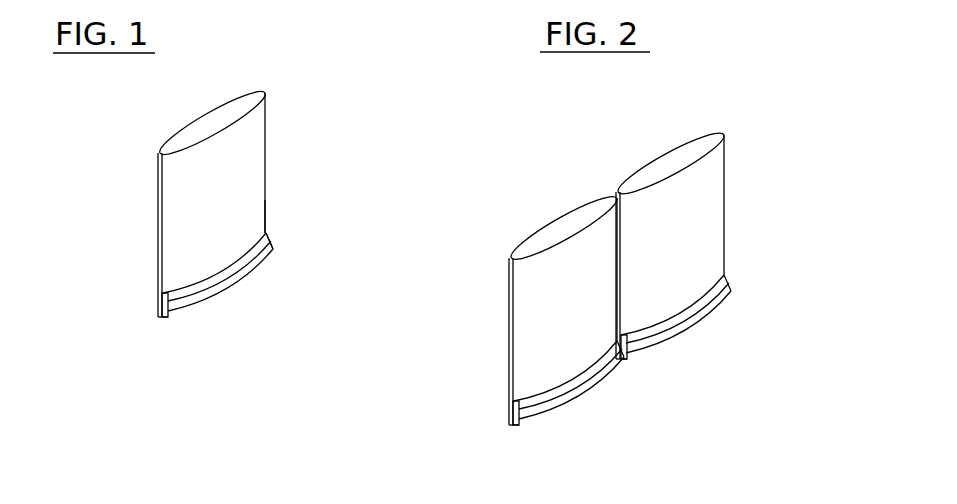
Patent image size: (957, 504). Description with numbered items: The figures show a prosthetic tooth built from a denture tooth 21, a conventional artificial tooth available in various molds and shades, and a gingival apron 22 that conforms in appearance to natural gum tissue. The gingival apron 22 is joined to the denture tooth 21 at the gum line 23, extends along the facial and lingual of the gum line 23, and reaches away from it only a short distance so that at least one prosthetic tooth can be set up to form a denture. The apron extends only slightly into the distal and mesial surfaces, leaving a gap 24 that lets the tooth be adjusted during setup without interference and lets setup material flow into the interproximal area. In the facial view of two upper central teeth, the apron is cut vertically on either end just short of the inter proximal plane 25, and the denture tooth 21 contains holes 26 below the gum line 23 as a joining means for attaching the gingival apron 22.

In FIG. 1, the denture tooth 21 is at (248, 152).
In FIG. 2, the denture tooth 21 is at (712, 195).
In FIG. 1, the gingival apron 22 is at (240, 280).
In FIG. 2, the gingival apron 22 is at (730, 292).
In FIG. 1, the gum line 23 is at (268, 233).
In FIG. 1, the gap 24 is at (153, 303).
In FIG. 2, the gap 24 is at (512, 412).
In FIG. 2, the inter proximal plane 25 is at (618, 406).
In FIG. 2, the holes 26 is at (690, 328).